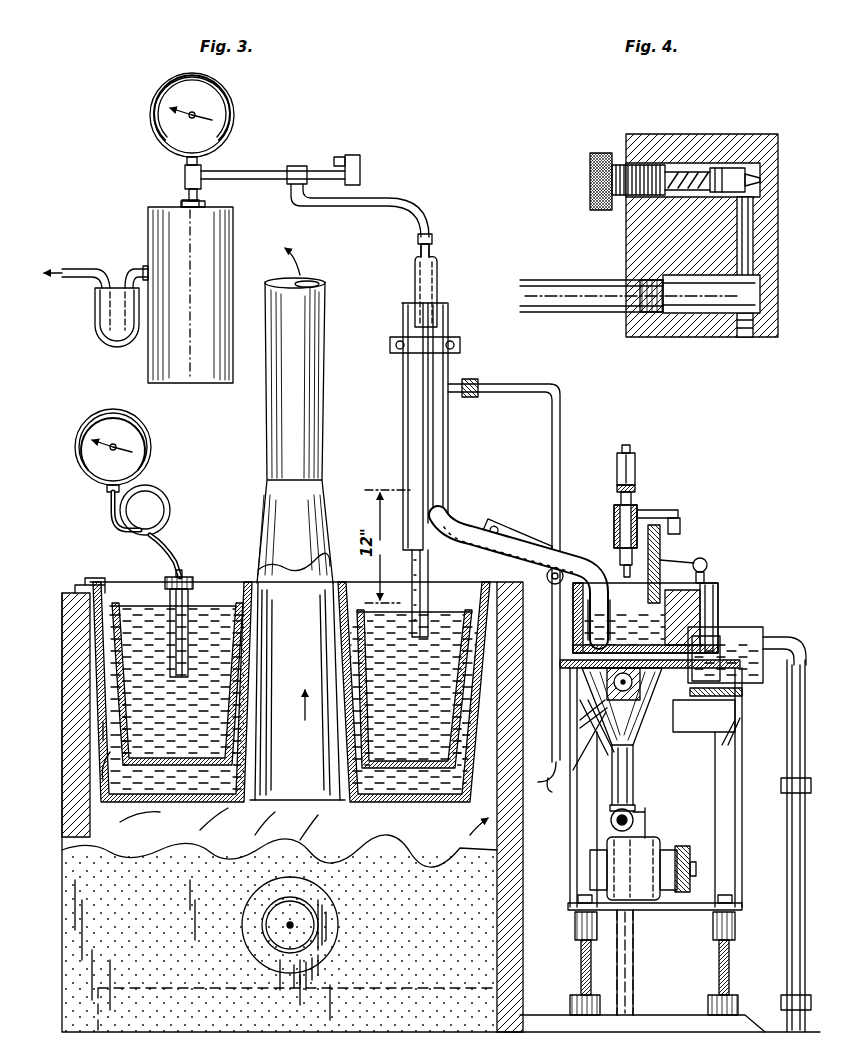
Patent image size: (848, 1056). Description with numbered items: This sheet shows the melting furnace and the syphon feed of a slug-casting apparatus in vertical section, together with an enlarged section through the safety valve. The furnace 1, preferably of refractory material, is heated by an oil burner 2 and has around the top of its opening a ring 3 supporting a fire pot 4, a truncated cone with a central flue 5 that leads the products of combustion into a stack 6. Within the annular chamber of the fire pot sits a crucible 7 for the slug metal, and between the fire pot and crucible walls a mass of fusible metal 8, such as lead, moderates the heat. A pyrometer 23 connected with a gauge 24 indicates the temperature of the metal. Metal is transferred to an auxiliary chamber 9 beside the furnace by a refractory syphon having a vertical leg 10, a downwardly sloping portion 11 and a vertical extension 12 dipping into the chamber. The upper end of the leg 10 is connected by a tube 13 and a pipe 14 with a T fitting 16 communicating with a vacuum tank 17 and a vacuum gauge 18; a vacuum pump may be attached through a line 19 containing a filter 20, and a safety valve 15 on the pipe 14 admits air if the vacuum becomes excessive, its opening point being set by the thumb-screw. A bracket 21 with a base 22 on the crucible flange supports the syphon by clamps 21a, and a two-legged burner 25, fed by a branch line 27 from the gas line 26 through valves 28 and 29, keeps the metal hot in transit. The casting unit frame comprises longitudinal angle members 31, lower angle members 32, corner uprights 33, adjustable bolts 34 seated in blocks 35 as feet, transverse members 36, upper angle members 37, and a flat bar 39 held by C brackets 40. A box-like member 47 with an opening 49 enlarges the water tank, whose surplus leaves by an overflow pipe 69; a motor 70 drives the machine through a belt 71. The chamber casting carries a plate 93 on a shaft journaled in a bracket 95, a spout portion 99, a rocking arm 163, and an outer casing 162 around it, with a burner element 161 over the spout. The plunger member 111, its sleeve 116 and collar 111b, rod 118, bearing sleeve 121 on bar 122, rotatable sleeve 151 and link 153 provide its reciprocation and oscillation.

In FIG. 3, the furnace 1 is at (515, 915).
In FIG. 3, the oil burner 2 is at (278, 910).
In FIG. 3, the ring 3 is at (70, 595).
In FIG. 3, the fire pot 4 is at (404, 800).
In FIG. 3, the flue 5 is at (325, 740).
In FIG. 3, the stack 6 is at (318, 418).
In FIG. 3, the crucible 7 is at (110, 582).
In FIG. 3, the fusible metal 8 is at (184, 795).
In FIG. 3, the auxiliary chamber 9 is at (600, 632).
In FIG. 3, the vertical leg 10 is at (420, 383).
In FIG. 3, the downwardly sloping portion 11 is at (468, 508).
In FIG. 3, the vertical extension 12 is at (586, 608).
In FIG. 3, the tube 13 is at (361, 220).
In FIG. 3, the pipe 14 is at (255, 174).
In FIG. 4, the pipe 14 is at (568, 282).
In FIG. 3, the safety valve 15 is at (362, 165).
In FIG. 4, the safety valve 15 is at (627, 238).
In FIG. 3, the T fitting 16 is at (184, 177).
In FIG. 3, the vacuum tank 17 is at (193, 280).
In FIG. 3, the vacuum gauge 18 is at (152, 117).
In FIG. 3, the line 19 is at (132, 270).
In FIG. 3, the filter 20 is at (110, 338).
In FIG. 3, the bracket 21 is at (450, 438).
In FIG. 3, the clamps 21a is at (462, 345).
In FIG. 3, the base 22 is at (486, 576).
In FIG. 3, the pyrometer 23 is at (192, 586).
In FIG. 3, the gauge 24 is at (148, 452).
In FIG. 3, the burner 25 is at (420, 463).
In FIG. 3, the pipe 26 is at (634, 968).
In FIG. 3, the branch line 27 is at (552, 432).
In FIG. 3, the valve 28 is at (547, 578).
In FIG. 3, the valve 29 is at (646, 820).
In FIG. 3, the longitudinal angle members 31 is at (568, 778).
In FIG. 3, the lower angle members 32 is at (576, 930).
In FIG. 3, the vertical angle members 33 is at (571, 866).
In FIG. 3, the adjustable bolts 34 is at (580, 978).
In FIG. 3, the blocks 35 is at (570, 1003).
In FIG. 3, the transverse angle members 36 is at (696, 725).
In FIG. 3, the upper angle members 37 is at (642, 690).
In FIG. 3, the flat bar 39 is at (743, 692).
In FIG. 3, the C brackets 40 is at (743, 718).
In FIG. 3, the box-like member 47 is at (772, 640).
In FIG. 3, the opening 49 is at (766, 630).
In FIG. 3, the overflow pipe 69 is at (787, 752).
In FIG. 3, the motor 70 is at (648, 845).
In FIG. 3, the belt 71 is at (693, 872).
In FIG. 3, the plate 93 is at (580, 706).
In FIG. 3, the bracket 95 is at (634, 770).
In FIG. 3, the spout portion 99 is at (720, 612).
In FIG. 3, the member 111 is at (706, 561).
In FIG. 3, the collar 111b is at (681, 526).
In FIG. 3, the sleeve 116 is at (662, 548).
In FIG. 3, the rod 118 is at (628, 448).
In FIG. 3, the sleeve 121 is at (637, 467).
In FIG. 3, the bar 122 is at (637, 488).
In FIG. 3, the sleeve 151 is at (614, 516).
In FIG. 3, the link 153 is at (678, 512).
In FIG. 3, the burner element 161 is at (706, 578).
In FIG. 3, the outer casing 162 is at (720, 594).
In FIG. 3, the arm 163 is at (560, 672).